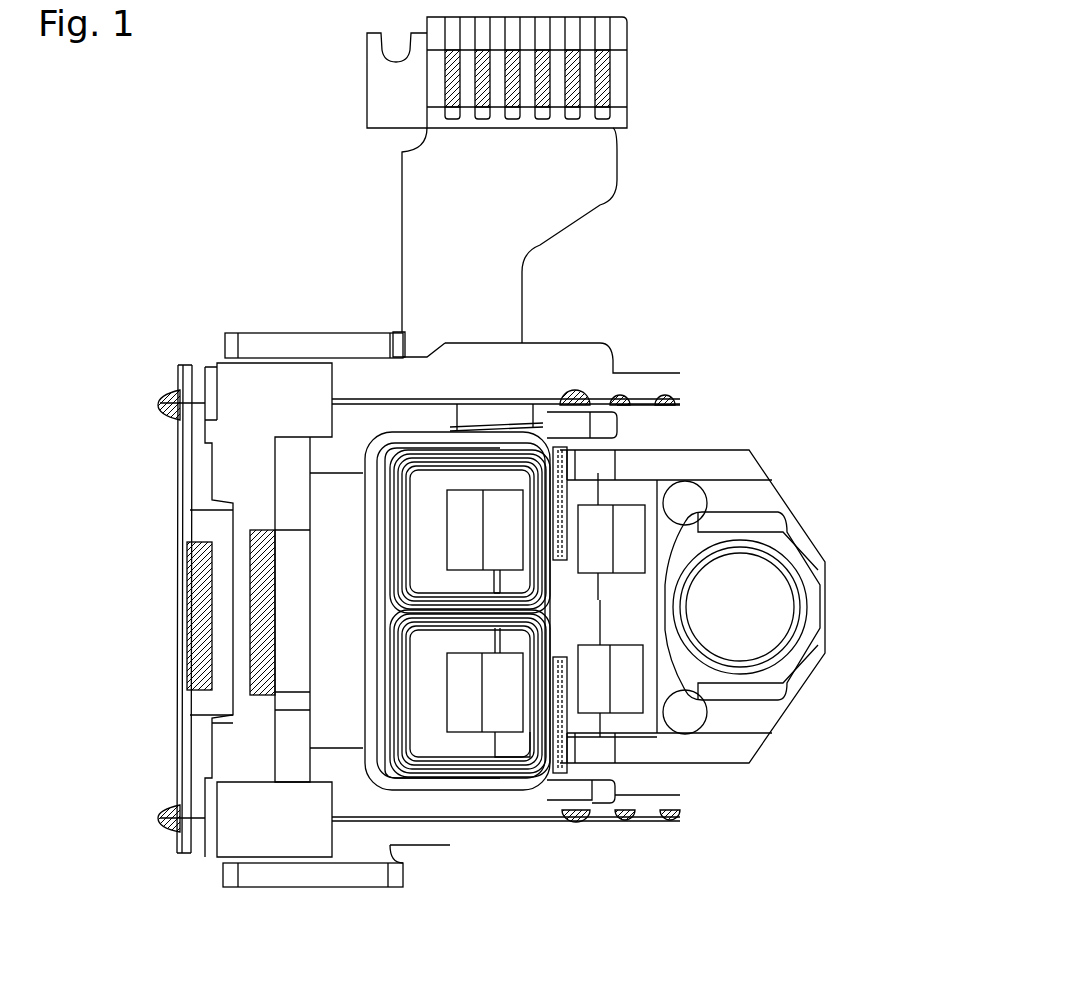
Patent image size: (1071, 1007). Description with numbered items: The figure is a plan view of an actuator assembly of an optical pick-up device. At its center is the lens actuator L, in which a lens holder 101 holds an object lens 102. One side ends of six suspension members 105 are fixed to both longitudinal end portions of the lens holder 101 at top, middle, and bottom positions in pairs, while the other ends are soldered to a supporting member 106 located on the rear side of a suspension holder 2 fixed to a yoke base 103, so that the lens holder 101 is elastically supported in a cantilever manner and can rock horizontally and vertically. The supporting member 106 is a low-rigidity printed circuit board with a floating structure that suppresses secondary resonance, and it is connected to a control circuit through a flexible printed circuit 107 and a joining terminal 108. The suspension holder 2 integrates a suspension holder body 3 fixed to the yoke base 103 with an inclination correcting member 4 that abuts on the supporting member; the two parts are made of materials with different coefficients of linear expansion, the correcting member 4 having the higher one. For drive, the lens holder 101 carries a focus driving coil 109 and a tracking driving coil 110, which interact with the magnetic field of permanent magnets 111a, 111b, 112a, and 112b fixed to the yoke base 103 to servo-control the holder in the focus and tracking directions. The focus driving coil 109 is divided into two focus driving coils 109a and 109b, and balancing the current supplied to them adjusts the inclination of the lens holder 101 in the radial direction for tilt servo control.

The suspension holder 2 is at (210, 362).
The suspension holder body 3 is at (250, 833).
The inclination correcting member 4 is at (205, 523).
The lens holder 101 is at (765, 498).
The object lens 102 is at (783, 608).
The yoke base 103 is at (295, 580).
The suspension members 105 is at (447, 400).
The supporting member 106 is at (183, 740).
The flexible printed circuit 107 is at (573, 190).
The joining terminal 108 is at (617, 75).
The focus driving coil 109 is at (395, 593).
The focus driving coil 109a is at (427, 772).
The focus driving coil 109b is at (428, 450).
The tracking driving coil 110 is at (597, 527).
The permanent magnet 111a is at (503, 713).
The permanent magnet 111b is at (500, 503).
The permanent magnet 112a is at (567, 723).
The permanent magnet 112b is at (568, 505).
The lens actuator L is at (796, 709).